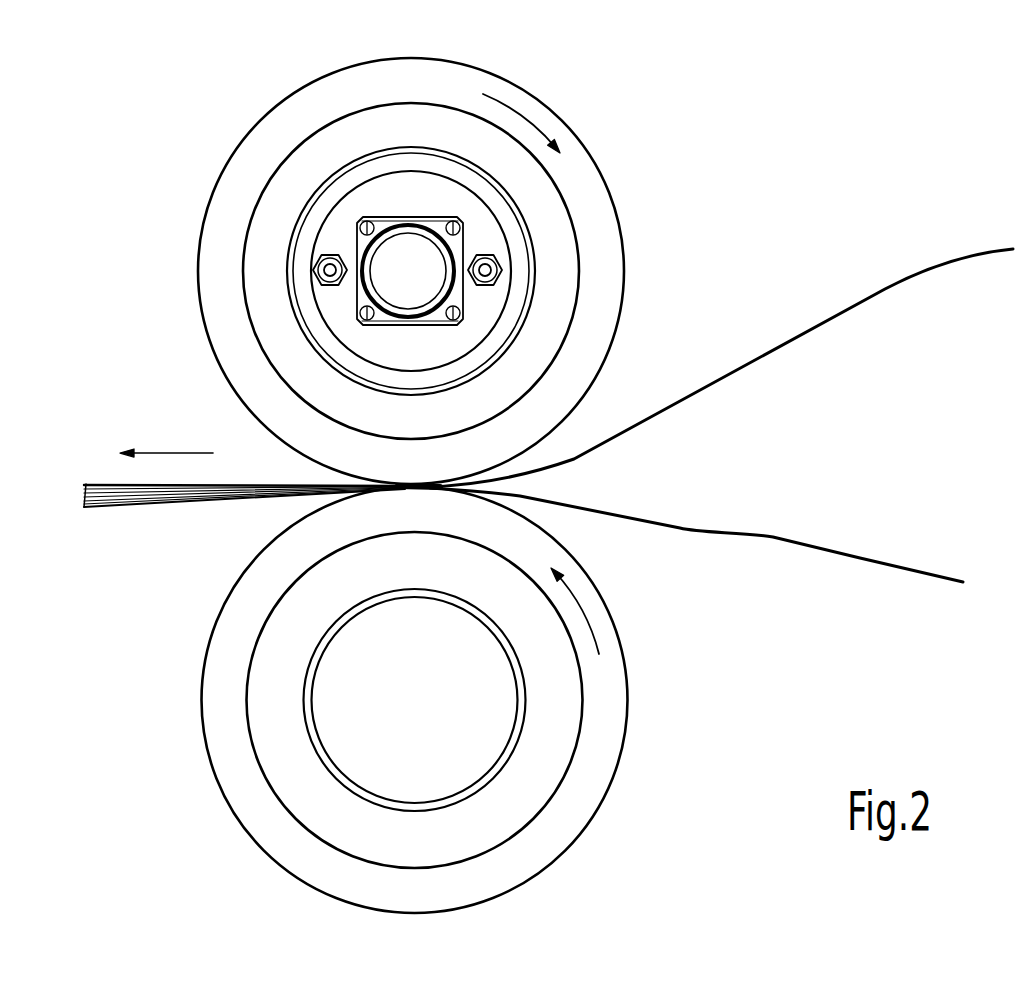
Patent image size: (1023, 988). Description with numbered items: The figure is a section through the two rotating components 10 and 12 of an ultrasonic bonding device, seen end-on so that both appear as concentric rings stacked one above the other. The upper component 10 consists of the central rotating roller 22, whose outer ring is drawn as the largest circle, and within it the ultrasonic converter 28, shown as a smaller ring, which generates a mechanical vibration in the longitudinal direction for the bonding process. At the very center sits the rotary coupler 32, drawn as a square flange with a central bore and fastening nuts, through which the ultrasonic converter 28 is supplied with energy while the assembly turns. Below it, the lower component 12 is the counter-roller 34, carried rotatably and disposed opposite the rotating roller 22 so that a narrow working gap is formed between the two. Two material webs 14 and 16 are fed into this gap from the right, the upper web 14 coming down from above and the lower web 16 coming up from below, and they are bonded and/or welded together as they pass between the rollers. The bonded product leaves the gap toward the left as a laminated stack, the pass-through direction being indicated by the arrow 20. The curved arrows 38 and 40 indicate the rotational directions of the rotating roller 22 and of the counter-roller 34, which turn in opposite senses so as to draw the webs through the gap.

The rotating component 10 is at (636, 124).
The rotating component 12 is at (640, 837).
The material web 14 is at (870, 297).
The material web 16 is at (857, 558).
The arrow 20 is at (181, 452).
The central rotating roller 22 is at (595, 240).
The ultrasonic converter 28 is at (423, 165).
The rotary coupler 32 is at (398, 258).
The counter-roller 34 is at (593, 740).
The arrow 38 is at (513, 106).
The arrow 40 is at (592, 617).